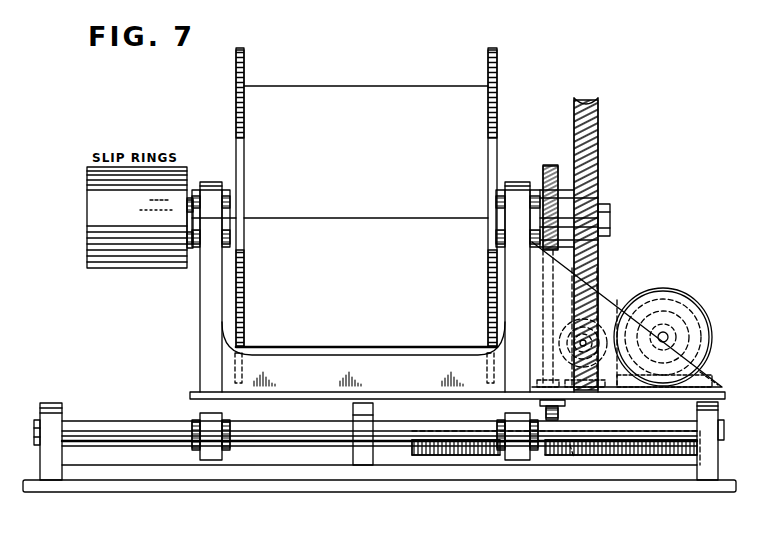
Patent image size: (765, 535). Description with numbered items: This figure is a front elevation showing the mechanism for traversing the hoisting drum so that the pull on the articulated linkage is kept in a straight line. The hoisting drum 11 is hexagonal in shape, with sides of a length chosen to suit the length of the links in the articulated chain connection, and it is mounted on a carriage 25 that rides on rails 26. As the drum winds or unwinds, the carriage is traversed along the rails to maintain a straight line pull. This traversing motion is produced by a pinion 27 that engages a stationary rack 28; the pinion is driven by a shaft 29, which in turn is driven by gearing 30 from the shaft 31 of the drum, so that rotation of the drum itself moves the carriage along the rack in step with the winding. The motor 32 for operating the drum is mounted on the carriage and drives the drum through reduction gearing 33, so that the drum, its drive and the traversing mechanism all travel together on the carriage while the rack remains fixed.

The hoisting drum 11 is at (381, 93).
The carriage 25 is at (210, 308).
The rails 26 is at (133, 428).
The pinion 27 is at (574, 458).
The stationary rack 28 is at (412, 450).
The shaft 29 is at (545, 305).
The gearing 30 is at (548, 163).
The shaft of the drum 31 is at (612, 220).
The motor 32 is at (688, 308).
The reduction gearing 33 is at (597, 300).